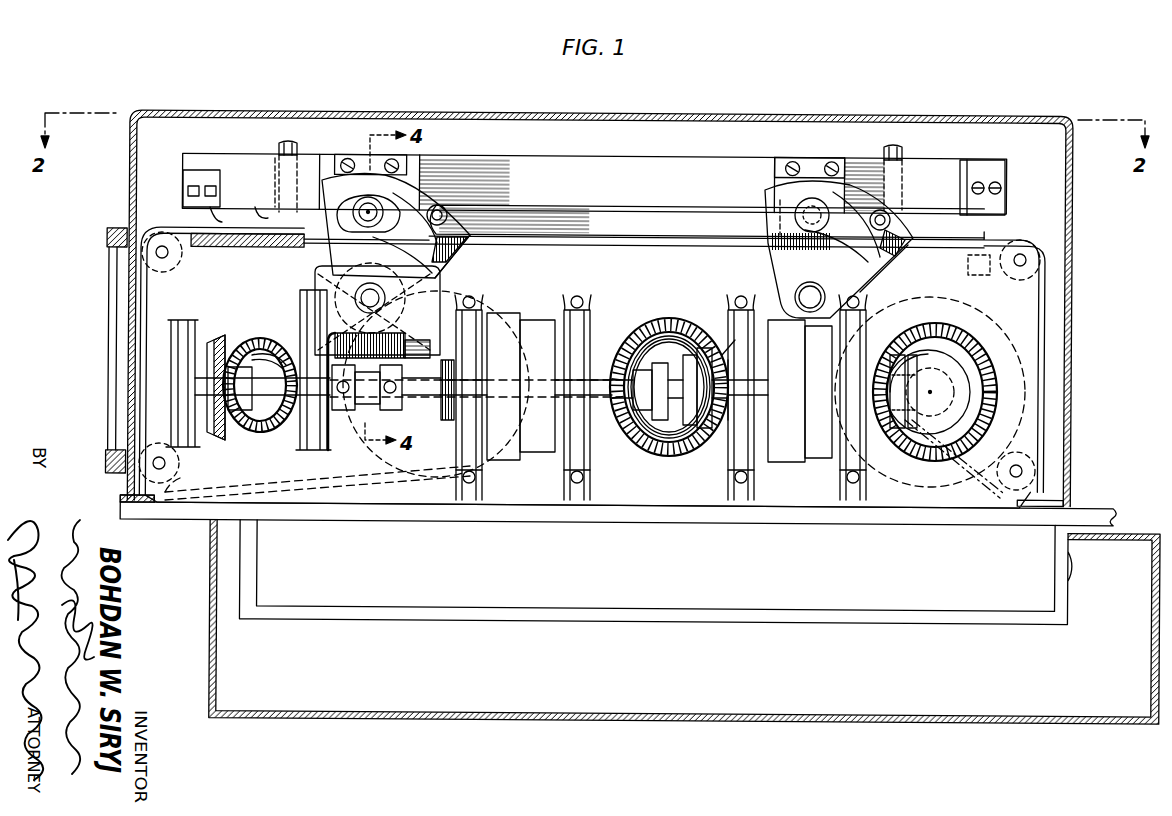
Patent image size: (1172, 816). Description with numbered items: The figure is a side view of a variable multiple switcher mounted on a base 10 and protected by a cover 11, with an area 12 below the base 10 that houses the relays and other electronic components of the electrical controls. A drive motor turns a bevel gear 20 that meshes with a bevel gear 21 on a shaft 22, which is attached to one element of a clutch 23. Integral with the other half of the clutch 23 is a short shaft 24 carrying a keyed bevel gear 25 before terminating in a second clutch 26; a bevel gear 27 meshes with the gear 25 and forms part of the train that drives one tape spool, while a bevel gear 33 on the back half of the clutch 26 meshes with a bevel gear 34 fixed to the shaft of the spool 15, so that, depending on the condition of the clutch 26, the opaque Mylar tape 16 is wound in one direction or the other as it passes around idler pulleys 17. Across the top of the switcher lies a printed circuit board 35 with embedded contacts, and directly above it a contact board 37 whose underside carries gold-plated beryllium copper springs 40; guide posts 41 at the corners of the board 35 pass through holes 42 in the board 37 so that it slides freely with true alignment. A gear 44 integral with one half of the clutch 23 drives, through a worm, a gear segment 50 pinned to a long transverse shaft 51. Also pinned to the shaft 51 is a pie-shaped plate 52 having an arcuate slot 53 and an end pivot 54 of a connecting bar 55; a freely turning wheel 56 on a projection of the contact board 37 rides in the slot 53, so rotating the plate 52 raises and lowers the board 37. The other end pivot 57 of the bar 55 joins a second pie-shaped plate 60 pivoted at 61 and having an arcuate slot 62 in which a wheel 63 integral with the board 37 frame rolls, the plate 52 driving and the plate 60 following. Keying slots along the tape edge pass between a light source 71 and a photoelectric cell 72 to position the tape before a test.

The base 10 is at (565, 518).
The cover 11 is at (538, 112).
The area below base 12 is at (650, 570).
The spool 15 is at (998, 338).
The Mylar tape 16 is at (175, 225).
The idler pulleys 17 is at (176, 258).
The bevel gear 20 is at (250, 352).
The bevel gear 21 is at (216, 343).
The shaft 22 is at (270, 378).
The clutch 23 is at (550, 346).
The short shaft 24 is at (622, 340).
The bevel gear 25 is at (733, 340).
The clutch 26 is at (792, 346).
The bevel gear 27 is at (672, 332).
The bevel gear 33 is at (895, 345).
The bevel gear 34 is at (950, 335).
The printed circuit board 35 is at (228, 246).
The contact board 37 is at (612, 158).
The springs 40 is at (258, 220).
The guide posts 41 is at (278, 150).
The holes 42 is at (276, 172).
The gear 44 is at (450, 358).
The gear segment 50 is at (352, 345).
The transverse shaft 51 is at (355, 296).
The pie-shaped plate 52 is at (366, 249).
The arcuate slot 53 is at (448, 258).
The end pivot 54 is at (445, 210).
The connecting bar 55 is at (588, 210).
The wheel 56 is at (385, 205).
The end pivot 57 is at (890, 215).
The pie-shaped plate 60 is at (814, 271).
The pivot 61 is at (815, 290).
The arcuate slot 62 is at (880, 262).
The wheel 63 is at (790, 205).
The light source 71 is at (984, 172).
The photoelectric cell 72 is at (968, 268).